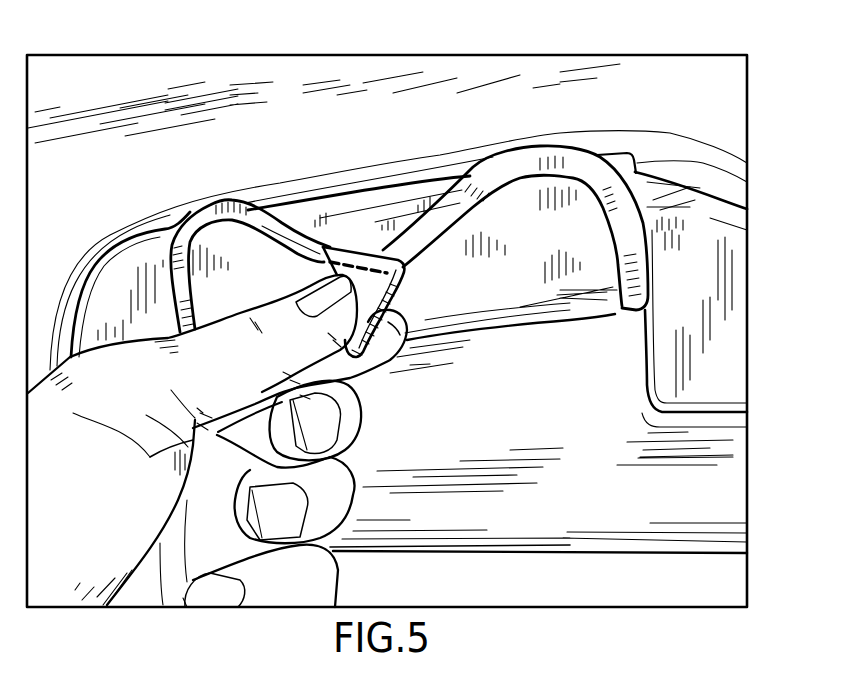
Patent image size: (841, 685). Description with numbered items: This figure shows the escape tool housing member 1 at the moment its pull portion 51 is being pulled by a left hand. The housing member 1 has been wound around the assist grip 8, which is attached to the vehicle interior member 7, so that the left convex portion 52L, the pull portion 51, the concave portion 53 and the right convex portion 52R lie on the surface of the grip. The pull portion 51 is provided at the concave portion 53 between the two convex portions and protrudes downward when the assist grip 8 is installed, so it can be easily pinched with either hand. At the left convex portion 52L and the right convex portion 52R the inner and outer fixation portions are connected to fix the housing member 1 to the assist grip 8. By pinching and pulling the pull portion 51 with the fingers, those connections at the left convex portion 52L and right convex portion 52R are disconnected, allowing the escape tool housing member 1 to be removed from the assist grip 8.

The escape tool housing member 1 is at (387, 208).
The left convex portion 52L is at (218, 200).
The right convex portion 52R is at (545, 148).
The concave portion 53 is at (370, 247).
The pull portion 51 is at (367, 337).
The vehicle interior member 7 is at (547, 502).
The assist grip 8 is at (660, 193).